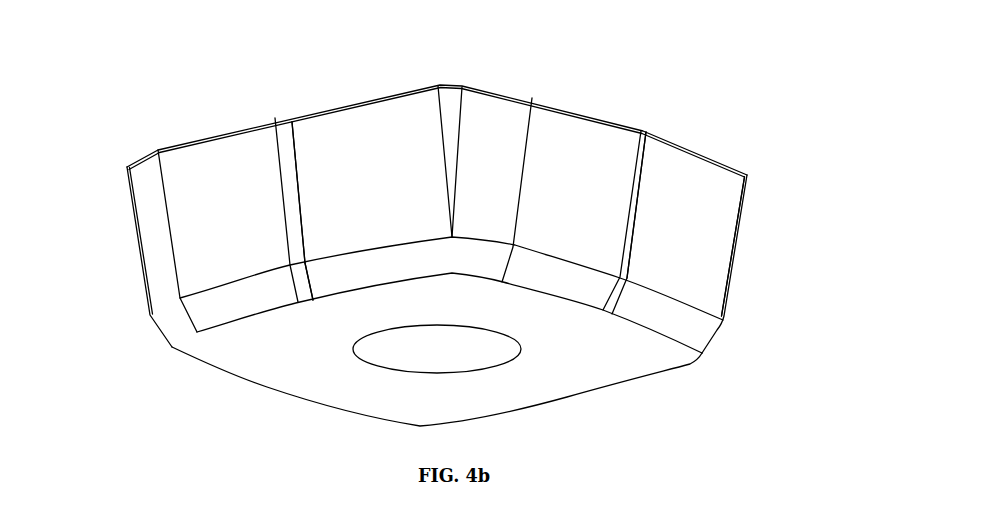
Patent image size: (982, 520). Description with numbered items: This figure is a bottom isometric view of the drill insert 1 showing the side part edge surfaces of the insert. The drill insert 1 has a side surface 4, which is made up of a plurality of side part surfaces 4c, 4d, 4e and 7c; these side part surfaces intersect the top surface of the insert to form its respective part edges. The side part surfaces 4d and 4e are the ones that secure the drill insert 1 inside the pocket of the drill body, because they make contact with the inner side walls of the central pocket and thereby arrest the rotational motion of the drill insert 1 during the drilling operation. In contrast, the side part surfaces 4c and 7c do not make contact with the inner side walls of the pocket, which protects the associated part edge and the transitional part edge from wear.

The drill insert 1 is at (628, 59).
The side surface 4 is at (774, 180).
The side part surface 4c is at (506, 97).
The side part surface 4d is at (606, 137).
The side part surface 4e is at (720, 235).
The side part surface 7c is at (287, 132).